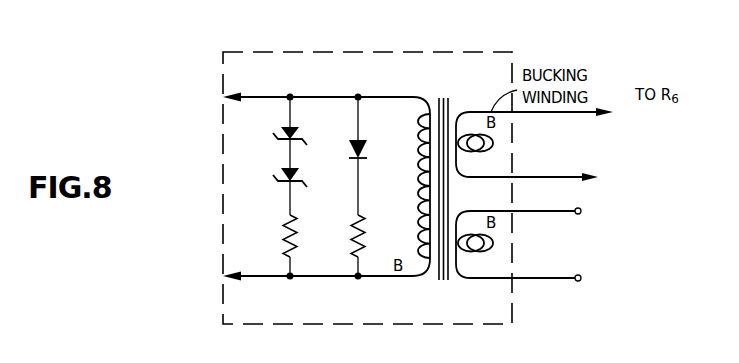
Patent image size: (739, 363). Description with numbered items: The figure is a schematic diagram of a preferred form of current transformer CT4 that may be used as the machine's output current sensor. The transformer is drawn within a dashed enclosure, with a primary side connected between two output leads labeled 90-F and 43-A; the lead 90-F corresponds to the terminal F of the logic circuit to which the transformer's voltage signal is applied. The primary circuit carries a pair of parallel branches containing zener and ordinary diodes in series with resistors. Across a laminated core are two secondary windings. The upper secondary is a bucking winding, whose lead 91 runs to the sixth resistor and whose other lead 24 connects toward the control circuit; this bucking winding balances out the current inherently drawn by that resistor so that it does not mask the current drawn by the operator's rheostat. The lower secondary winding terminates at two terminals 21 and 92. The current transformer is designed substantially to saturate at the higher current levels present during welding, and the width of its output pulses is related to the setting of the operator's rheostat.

The current transformer CT4 is at (298, 52).
The output lead to terminal 90-F is at (303, 99).
The output lead to terminal 43-A is at (303, 272).
The bucking winding lead to resistor R6 91 is at (537, 115).
The control circuit 24 is at (539, 166).
The secondary winding terminal 21 is at (533, 223).
The secondary winding terminal 92 is at (533, 266).